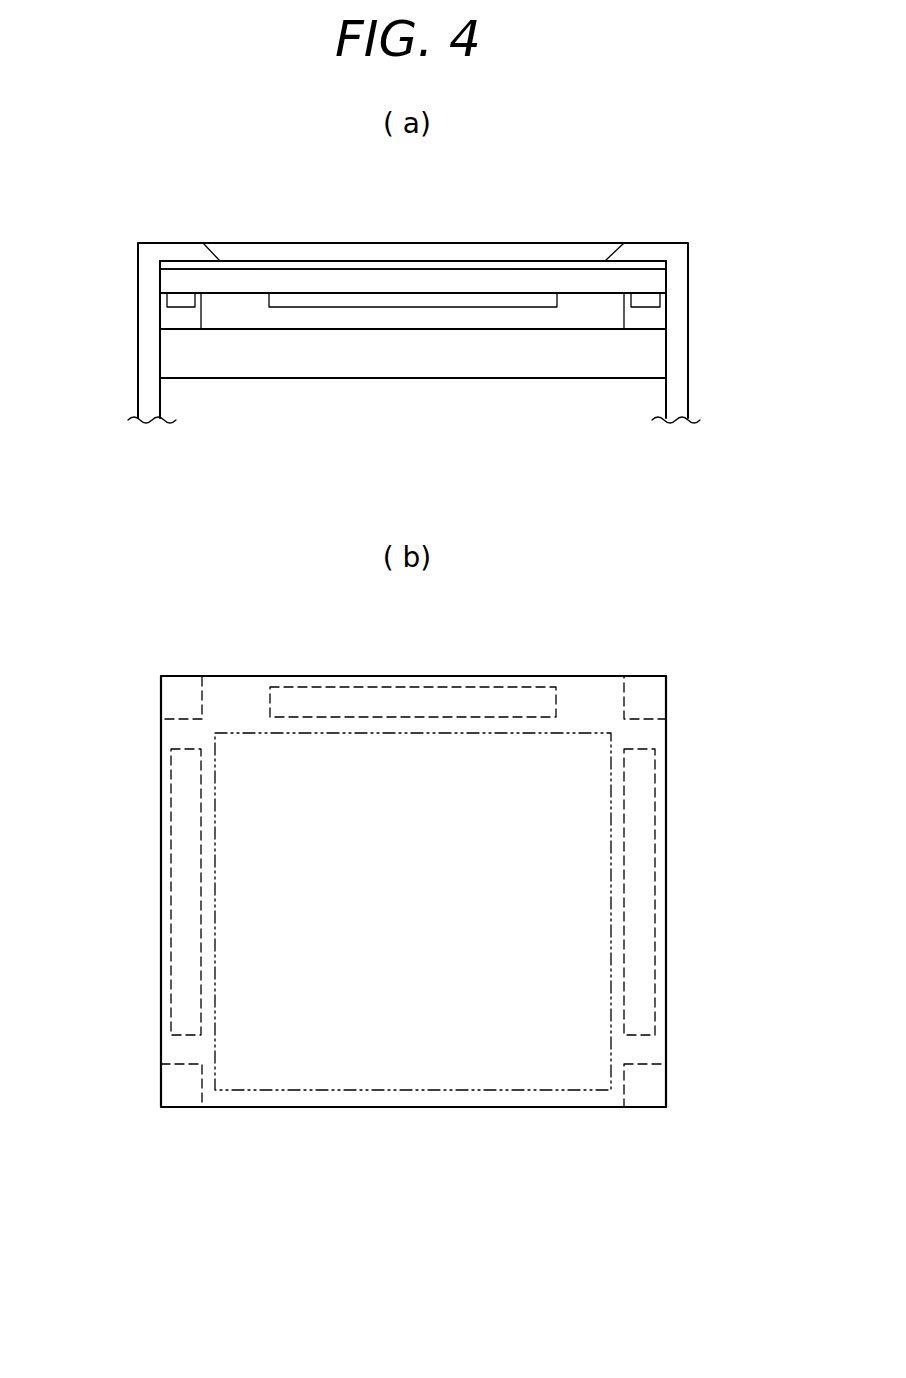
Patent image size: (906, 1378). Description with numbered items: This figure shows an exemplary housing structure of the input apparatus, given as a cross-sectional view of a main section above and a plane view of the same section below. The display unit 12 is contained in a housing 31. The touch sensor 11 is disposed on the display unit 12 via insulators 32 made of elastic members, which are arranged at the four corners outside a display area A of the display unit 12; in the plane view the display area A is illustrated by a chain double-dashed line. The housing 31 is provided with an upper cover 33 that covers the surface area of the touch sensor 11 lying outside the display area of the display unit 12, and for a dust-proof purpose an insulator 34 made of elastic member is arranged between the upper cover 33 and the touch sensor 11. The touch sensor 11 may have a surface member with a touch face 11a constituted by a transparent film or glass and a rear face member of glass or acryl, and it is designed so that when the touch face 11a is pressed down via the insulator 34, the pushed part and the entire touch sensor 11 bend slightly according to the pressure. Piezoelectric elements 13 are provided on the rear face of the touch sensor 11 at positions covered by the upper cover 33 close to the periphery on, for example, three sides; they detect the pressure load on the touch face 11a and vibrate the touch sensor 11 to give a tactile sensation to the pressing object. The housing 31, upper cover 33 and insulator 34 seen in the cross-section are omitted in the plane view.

The touch sensor 11 is at (270, 282).
The touch face 11a is at (327, 270).
The display unit 12 is at (327, 355).
The piezoelectric element 13 is at (165, 300).
The housing 31 is at (680, 385).
The insulator 32 is at (165, 320).
The upper cover 33 is at (638, 253).
The insulator 34 is at (517, 265).
The display area A is at (215, 800).